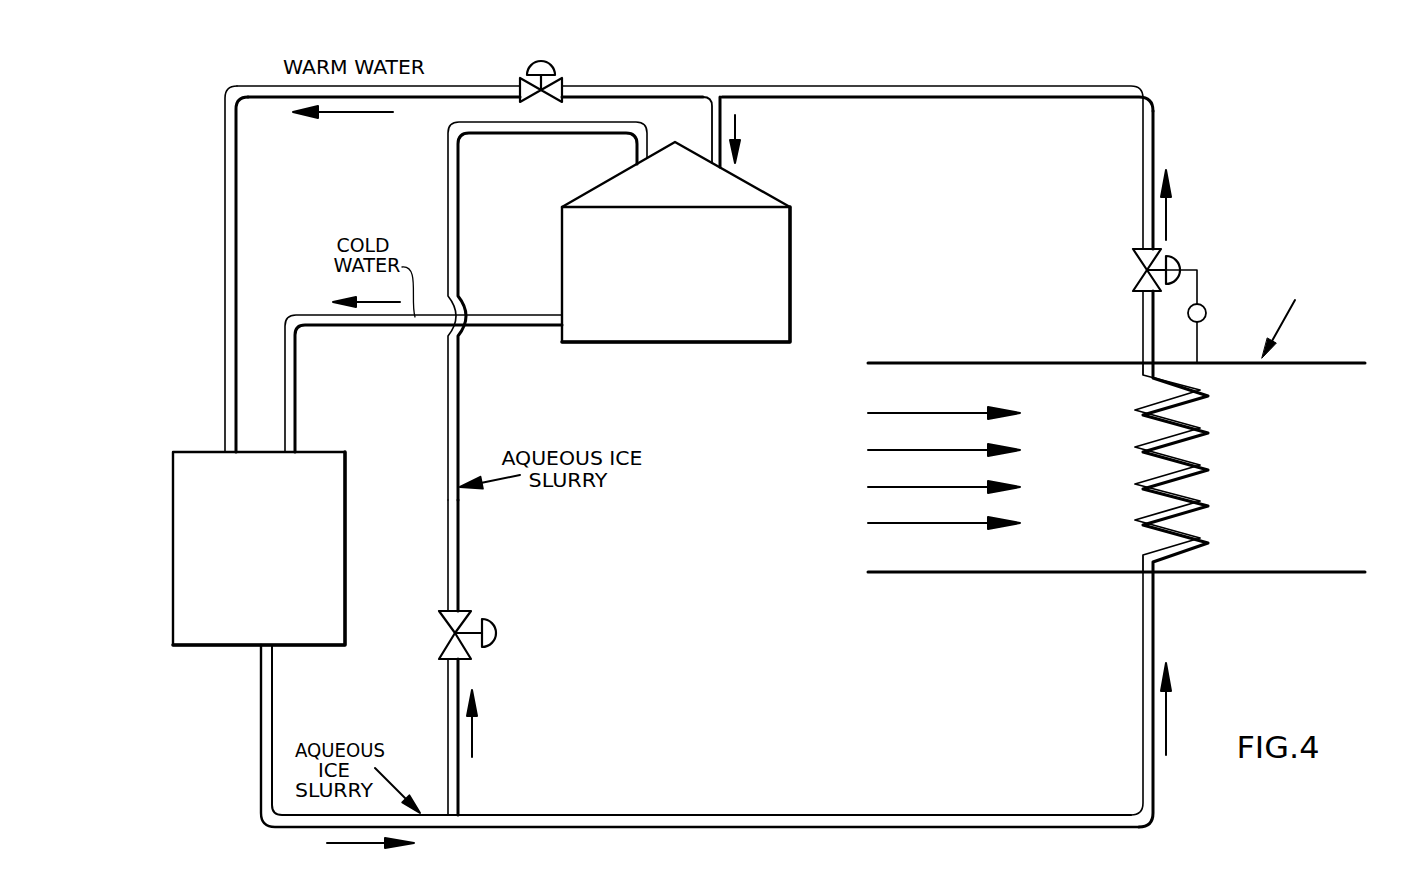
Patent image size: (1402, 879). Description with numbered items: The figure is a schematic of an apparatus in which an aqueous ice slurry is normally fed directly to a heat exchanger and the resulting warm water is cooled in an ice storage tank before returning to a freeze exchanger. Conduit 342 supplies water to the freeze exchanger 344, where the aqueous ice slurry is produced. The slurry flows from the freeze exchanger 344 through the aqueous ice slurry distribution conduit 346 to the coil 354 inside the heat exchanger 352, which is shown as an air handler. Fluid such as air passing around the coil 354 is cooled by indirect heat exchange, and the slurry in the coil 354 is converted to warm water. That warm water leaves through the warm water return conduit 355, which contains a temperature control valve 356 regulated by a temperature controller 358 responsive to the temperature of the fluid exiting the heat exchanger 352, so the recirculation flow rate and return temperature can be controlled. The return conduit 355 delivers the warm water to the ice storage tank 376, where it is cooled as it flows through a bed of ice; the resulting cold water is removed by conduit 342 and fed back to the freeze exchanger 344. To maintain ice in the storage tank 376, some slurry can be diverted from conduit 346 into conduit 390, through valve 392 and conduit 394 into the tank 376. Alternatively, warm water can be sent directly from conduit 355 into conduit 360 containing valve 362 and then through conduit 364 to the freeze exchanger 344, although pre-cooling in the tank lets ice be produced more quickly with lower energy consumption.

The conduit 342 is at (360, 318).
The freeze exchanger 344 is at (328, 500).
The aqueous ice slurry distribution conduit 346 is at (265, 708).
The heat exchanger 352 is at (1323, 358).
The coil 354 is at (1200, 505).
The warm water return conduit 355 is at (718, 108).
The temperature control valve 356 is at (1135, 260).
The temperature controller 358 is at (1207, 315).
The conduit 360 is at (637, 88).
The valve 362 is at (558, 80).
The conduit 364 is at (238, 215).
The ice storage tank 376 is at (780, 270).
The conduit 390 is at (460, 778).
The valve 392 is at (467, 617).
The conduit 394 is at (453, 388).